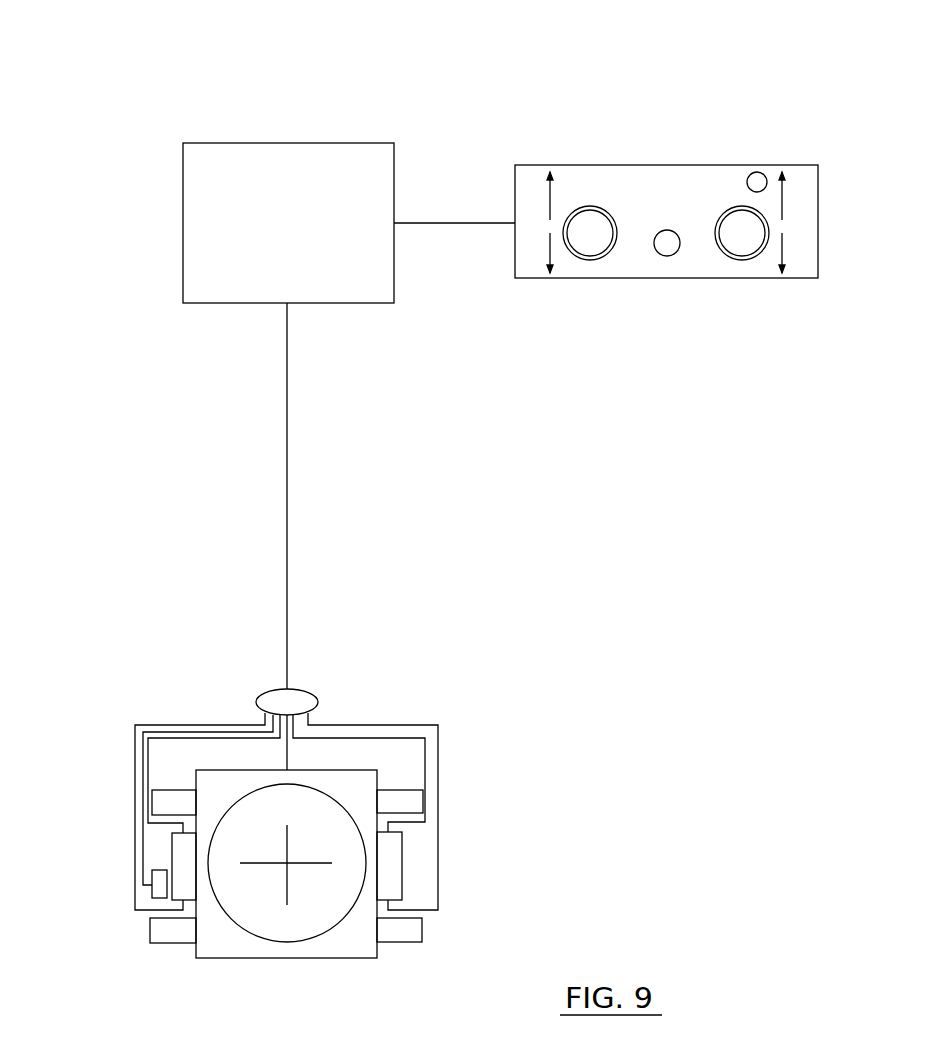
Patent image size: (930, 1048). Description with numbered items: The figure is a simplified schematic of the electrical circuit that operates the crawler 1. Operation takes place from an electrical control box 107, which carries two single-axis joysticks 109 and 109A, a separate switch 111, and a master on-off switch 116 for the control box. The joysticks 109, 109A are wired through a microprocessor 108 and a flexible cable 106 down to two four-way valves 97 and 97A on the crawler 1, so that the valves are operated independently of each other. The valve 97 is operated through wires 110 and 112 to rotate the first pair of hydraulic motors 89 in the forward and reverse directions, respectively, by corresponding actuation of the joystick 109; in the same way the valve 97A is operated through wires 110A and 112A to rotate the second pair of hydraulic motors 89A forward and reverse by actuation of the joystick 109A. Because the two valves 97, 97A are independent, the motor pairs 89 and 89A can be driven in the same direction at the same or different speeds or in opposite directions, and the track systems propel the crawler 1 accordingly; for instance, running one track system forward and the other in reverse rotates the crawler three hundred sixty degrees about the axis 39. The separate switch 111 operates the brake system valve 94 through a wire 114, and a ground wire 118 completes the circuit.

The crawler 1 is at (297, 964).
The axis 39 is at (290, 864).
The hydraulic motors 89 is at (407, 803).
The hydraulic motors 89A is at (160, 805).
The valve 94 is at (155, 892).
The four-way valve 97 is at (387, 870).
The four-way valve 97A is at (180, 852).
The flexible cable 106 is at (287, 560).
The electrical control box 107 is at (592, 158).
The microprocessor 108 is at (260, 160).
The joystick 109 is at (588, 242).
The joystick 109A is at (742, 242).
The wire 110 is at (439, 763).
The wire 110A is at (135, 757).
The switch 111 is at (755, 178).
The wire 112 is at (357, 740).
The wire 112A is at (168, 738).
The wire 114 is at (213, 738).
The master on-off switch 116 is at (665, 245).
The ground wire 118 is at (285, 758).